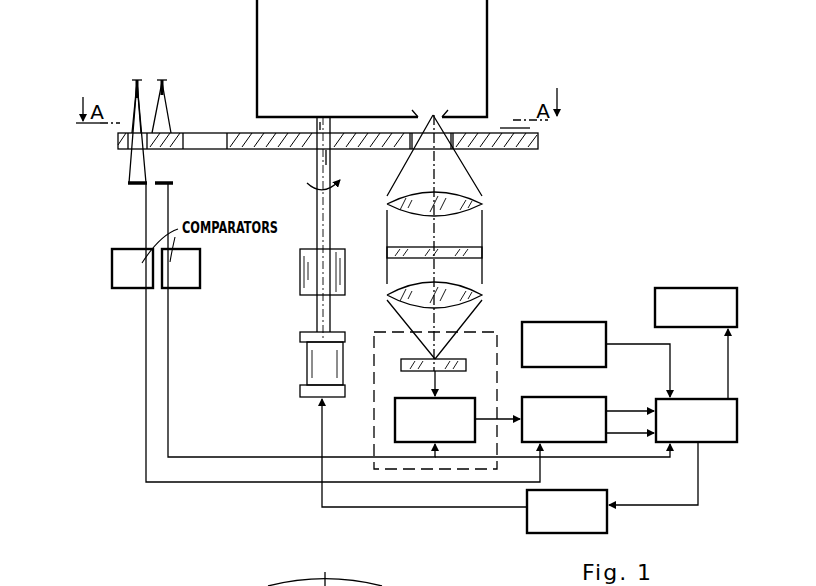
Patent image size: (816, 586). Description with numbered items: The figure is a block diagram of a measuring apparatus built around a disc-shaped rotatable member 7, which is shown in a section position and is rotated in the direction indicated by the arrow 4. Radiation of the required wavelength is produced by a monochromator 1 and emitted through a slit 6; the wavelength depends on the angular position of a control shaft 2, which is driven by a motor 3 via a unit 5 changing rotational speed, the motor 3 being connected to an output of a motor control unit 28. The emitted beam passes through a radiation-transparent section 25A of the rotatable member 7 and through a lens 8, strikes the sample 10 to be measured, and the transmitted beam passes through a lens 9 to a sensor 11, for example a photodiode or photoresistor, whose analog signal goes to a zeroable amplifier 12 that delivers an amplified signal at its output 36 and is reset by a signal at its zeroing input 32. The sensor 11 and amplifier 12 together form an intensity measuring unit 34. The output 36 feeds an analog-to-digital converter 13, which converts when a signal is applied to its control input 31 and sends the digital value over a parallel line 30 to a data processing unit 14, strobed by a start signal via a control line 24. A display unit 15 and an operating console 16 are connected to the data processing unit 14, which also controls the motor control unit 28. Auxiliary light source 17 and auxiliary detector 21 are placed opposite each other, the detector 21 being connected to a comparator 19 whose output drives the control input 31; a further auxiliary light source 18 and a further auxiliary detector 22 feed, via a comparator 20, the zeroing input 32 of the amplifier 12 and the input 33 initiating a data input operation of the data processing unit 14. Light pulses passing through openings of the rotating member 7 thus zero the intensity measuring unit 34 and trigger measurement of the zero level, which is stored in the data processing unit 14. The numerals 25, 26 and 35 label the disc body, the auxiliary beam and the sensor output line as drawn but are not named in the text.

The monochromator 1 is at (479, 24).
The control shaft 2 is at (326, 112).
The motor 3 is at (306, 366).
The arrow 4 is at (315, 578).
The unit changing rotational speed 5 is at (300, 274).
The slit 6 is at (437, 108).
The disc-shaped rotatable member 7 is at (497, 128).
The lens 8 is at (482, 204).
The lens 9 is at (482, 292).
The sample 10 is at (482, 252).
The sensor 11 is at (462, 374).
The zeroable amplifier 12 is at (395, 426).
The analog-to-digital converter 13 is at (588, 397).
The data processing unit 14 is at (722, 445).
The display unit 15 is at (696, 290).
The operating console 16 is at (580, 322).
The auxiliary light source 17 is at (134, 78).
The further auxiliary light source 18 is at (161, 78).
The comparator 19 is at (121, 290).
The comparator 20 is at (192, 290).
The auxiliary detector 21 is at (132, 185).
The further auxiliary detector 22 is at (170, 186).
The control line 24 is at (632, 446).
The chopper disk 25 is at (222, 150).
The radiation-transparent section 25A is at (452, 150).
The light beam 26 is at (132, 126).
The motor control unit 28 is at (527, 523).
The parallel line 30 is at (618, 410).
The control input 31 is at (543, 470).
The zeroing input 32 is at (430, 456).
The input initiating a data input operation 33 is at (670, 458).
The intensity measuring unit 34 is at (477, 342).
The detector output line 35 is at (433, 384).
The output 36 is at (500, 418).